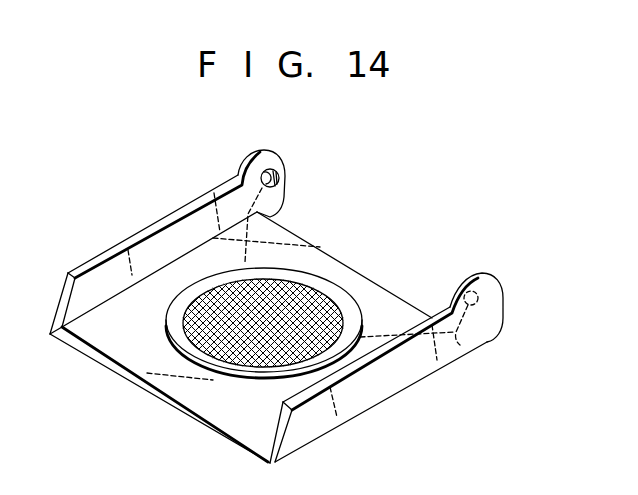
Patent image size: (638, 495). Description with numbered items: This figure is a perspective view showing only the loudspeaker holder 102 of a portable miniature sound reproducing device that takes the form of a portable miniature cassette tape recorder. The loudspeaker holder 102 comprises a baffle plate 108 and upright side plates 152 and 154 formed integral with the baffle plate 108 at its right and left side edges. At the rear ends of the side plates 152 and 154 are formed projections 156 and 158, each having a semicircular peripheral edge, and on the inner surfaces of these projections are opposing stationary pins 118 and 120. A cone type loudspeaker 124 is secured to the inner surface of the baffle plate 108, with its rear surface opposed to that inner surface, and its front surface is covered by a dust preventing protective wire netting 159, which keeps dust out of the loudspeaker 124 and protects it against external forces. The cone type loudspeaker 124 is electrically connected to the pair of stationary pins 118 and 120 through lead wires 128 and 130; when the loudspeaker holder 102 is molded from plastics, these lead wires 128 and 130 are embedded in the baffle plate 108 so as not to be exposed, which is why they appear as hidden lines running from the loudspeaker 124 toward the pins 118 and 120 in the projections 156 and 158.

The loudspeaker holder 102 is at (136, 207).
The baffle plate 108 is at (145, 352).
The stationary pin 118 is at (280, 175).
The stationary pin 120 is at (478, 298).
The cone type loudspeaker 124 is at (216, 393).
The lead wire 128 is at (243, 263).
The lead wire 130 is at (457, 340).
The upright side plate 152 is at (88, 283).
The upright side plate 154 is at (310, 425).
The projection 156 is at (253, 163).
The projection 158 is at (477, 273).
The dust preventing protective wire netting 159 is at (258, 350).